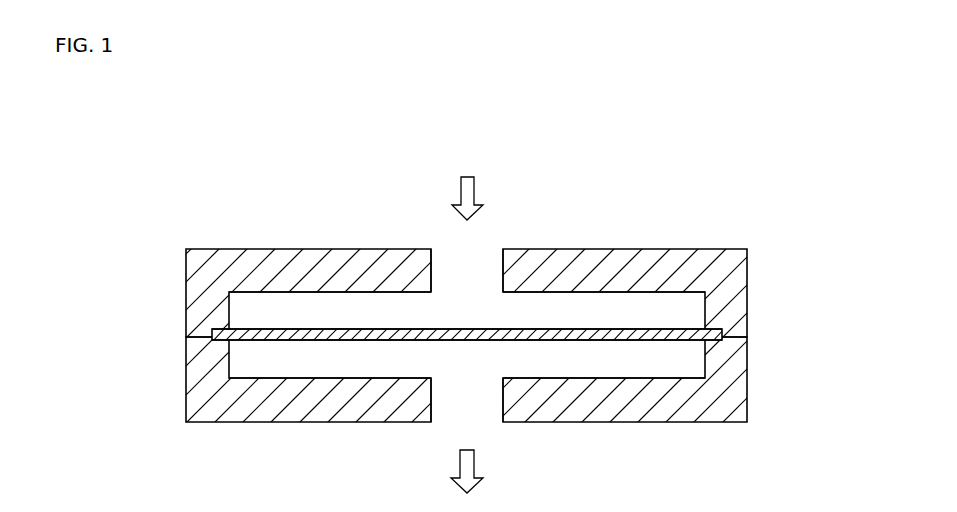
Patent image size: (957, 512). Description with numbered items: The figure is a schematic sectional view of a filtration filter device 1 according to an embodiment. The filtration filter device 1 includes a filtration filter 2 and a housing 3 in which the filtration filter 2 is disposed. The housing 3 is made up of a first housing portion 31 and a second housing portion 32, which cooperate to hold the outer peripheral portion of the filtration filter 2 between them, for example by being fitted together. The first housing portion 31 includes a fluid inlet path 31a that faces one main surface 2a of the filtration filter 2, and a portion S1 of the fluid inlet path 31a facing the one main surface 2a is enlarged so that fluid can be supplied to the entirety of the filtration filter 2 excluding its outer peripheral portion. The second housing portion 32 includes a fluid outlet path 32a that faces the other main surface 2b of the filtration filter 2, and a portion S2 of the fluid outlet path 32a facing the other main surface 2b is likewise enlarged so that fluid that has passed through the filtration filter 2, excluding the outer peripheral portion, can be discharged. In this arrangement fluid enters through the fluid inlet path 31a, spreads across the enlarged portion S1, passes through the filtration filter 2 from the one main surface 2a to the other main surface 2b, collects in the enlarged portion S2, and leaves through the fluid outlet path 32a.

The filtration filter device 1 is at (213, 140).
The filtration filter 2 is at (657, 336).
The one main surface 2a is at (282, 329).
The other main surface 2b is at (296, 341).
The housing 3 is at (485, 304).
The first housing portion 31 is at (735, 300).
The second housing portion 32 is at (833, 285).
The fluid inlet path 31a is at (481, 261).
The fluid outlet path 32a is at (484, 412).
The portion of the fluid inlet path S1 is at (566, 313).
The portion of the fluid outlet path S2 is at (568, 360).